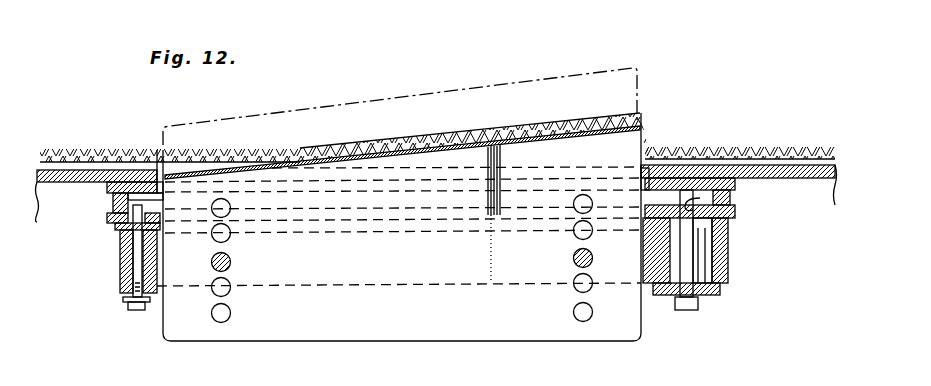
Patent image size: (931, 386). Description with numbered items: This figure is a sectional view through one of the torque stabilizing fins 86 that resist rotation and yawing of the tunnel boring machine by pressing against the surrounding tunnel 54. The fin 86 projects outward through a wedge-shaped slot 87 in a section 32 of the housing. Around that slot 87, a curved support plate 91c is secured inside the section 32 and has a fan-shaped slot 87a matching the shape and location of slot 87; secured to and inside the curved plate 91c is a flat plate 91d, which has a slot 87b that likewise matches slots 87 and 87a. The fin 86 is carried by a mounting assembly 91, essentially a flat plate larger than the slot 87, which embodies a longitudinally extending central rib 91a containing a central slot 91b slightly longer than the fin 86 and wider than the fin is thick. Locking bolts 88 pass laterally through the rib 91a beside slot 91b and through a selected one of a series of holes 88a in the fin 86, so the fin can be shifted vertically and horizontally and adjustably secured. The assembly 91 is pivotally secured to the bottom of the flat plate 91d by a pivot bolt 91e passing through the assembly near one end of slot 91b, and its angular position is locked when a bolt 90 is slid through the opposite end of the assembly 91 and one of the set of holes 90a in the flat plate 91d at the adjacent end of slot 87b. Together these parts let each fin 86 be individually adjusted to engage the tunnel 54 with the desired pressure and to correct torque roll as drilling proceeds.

The section of housing 32 is at (806, 181).
The tunnel 54 is at (766, 155).
The torque stabilizing fin 86 is at (458, 86).
The wedge-shaped slot 87 is at (649, 170).
The fan-shaped slot 87a is at (157, 150).
The slot in flat plate 87b is at (372, 214).
The locking bolt 88 is at (212, 262).
The hole in fin 88a is at (229, 236).
The locking bolt 90 is at (688, 272).
The hole in flat plate 90a is at (700, 202).
The fin mounting assembly 91 is at (735, 250).
The central rib 91a is at (433, 287).
The central slot 91b is at (158, 298).
The curved support plate 91c is at (107, 188).
The flat plate 91d is at (108, 218).
The pivot bolt 91e is at (137, 268).